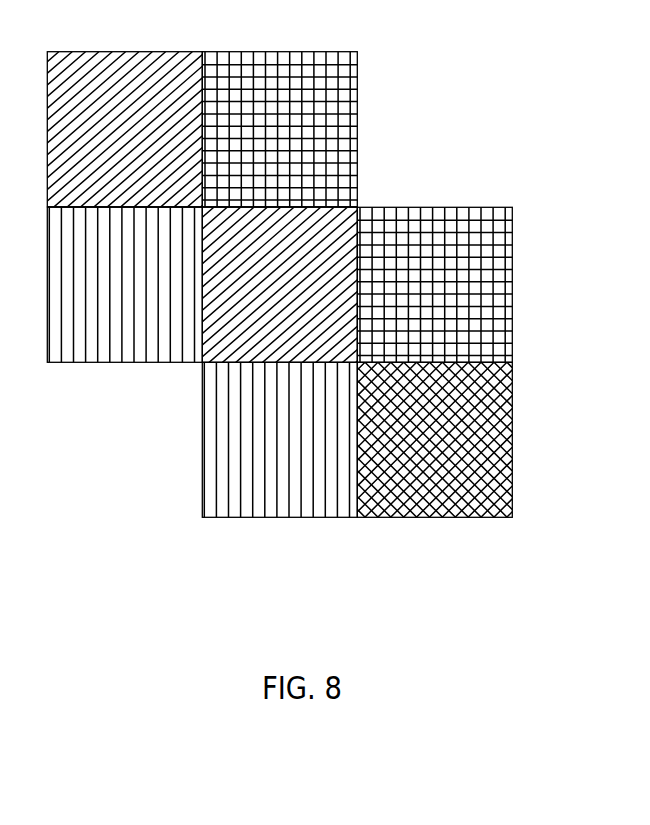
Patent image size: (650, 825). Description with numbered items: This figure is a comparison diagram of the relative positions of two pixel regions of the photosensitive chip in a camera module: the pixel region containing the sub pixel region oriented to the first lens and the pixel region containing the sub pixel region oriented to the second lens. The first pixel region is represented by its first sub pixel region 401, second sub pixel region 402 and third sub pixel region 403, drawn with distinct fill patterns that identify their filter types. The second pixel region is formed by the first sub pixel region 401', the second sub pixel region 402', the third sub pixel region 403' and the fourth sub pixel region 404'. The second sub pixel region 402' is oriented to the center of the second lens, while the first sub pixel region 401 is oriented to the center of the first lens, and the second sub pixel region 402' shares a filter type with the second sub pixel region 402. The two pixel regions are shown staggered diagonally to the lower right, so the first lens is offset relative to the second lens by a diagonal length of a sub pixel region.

The first sub pixel region 401 is at (189, 117).
The second sub pixel region 402 is at (280, 108).
The third sub pixel region 403 is at (124, 311).
The first sub pixel region 401' is at (274, 246).
The second sub pixel region 402' is at (437, 262).
The third sub pixel region 403' is at (282, 465).
The fourth sub pixel region 404' is at (427, 467).